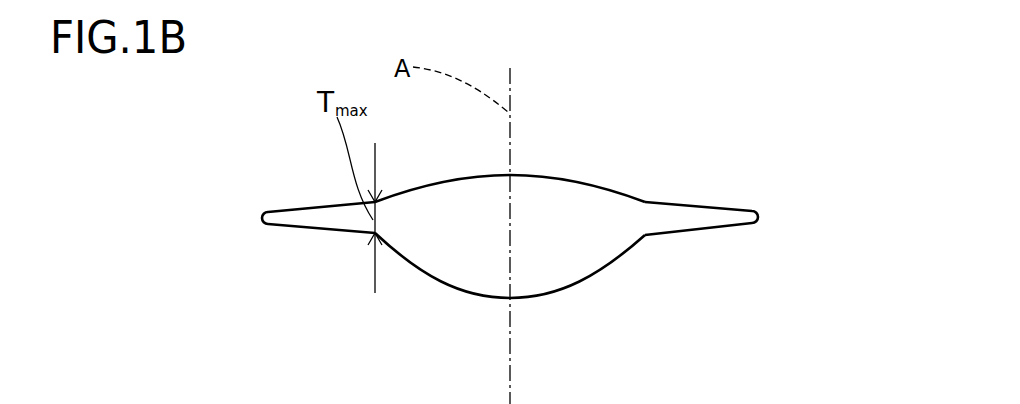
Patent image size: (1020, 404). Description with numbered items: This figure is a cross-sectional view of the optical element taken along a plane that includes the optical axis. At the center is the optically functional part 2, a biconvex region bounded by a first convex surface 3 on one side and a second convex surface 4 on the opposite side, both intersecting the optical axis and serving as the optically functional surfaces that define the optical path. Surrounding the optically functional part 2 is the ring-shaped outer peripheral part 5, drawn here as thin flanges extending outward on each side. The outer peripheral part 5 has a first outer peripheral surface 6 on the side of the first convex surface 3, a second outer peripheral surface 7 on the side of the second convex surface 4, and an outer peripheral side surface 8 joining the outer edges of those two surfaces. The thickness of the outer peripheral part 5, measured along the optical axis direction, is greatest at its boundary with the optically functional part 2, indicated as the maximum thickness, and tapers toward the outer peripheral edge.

The optically functional part 2 is at (550, 258).
The first convex surface 3 is at (577, 182).
The second convex surface 4 is at (628, 252).
The outer peripheral part 5 is at (338, 222).
The first outer peripheral surface 6 is at (303, 208).
The second outer peripheral surface 7 is at (303, 229).
The outer peripheral side surface 8 is at (262, 217).